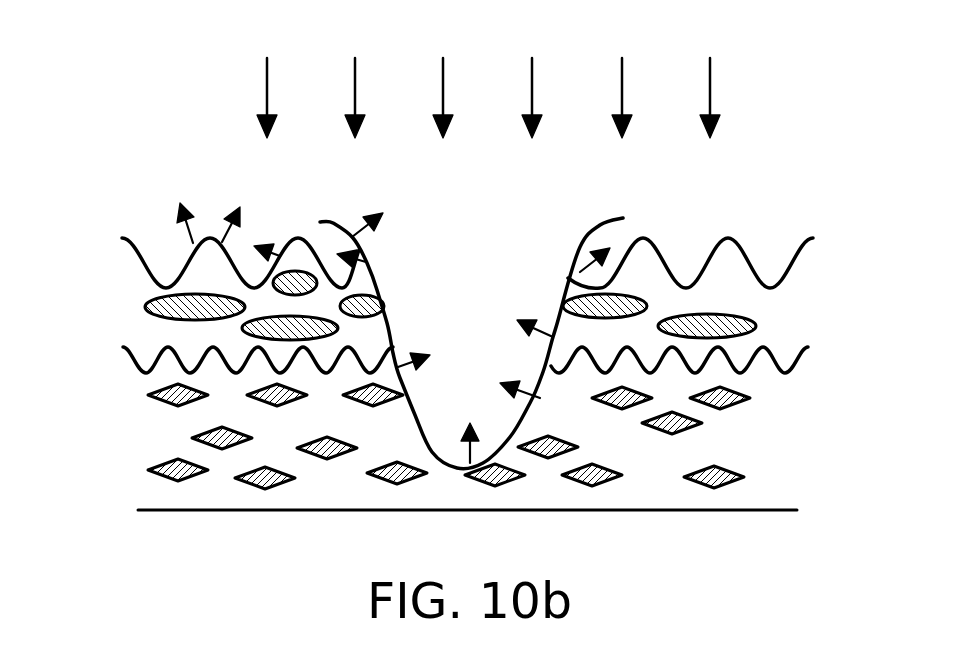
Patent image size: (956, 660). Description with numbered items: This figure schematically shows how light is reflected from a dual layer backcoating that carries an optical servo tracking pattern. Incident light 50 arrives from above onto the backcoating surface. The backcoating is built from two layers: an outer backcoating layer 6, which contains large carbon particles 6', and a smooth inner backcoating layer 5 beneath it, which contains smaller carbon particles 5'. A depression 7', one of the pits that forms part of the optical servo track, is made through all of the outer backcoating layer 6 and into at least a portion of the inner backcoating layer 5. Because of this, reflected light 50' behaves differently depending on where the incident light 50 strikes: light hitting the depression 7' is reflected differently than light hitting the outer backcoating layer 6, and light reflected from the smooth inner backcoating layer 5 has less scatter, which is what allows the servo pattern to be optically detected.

The incident light 50 is at (488, 78).
The reflected light 50' is at (393, 318).
The inner backcoating layer 5 is at (433, 310).
The smaller carbon particles 5' is at (492, 436).
The outer backcoating layer 6 is at (467, 259).
The large carbon particles 6' is at (482, 305).
The depressions 7' is at (471, 343).